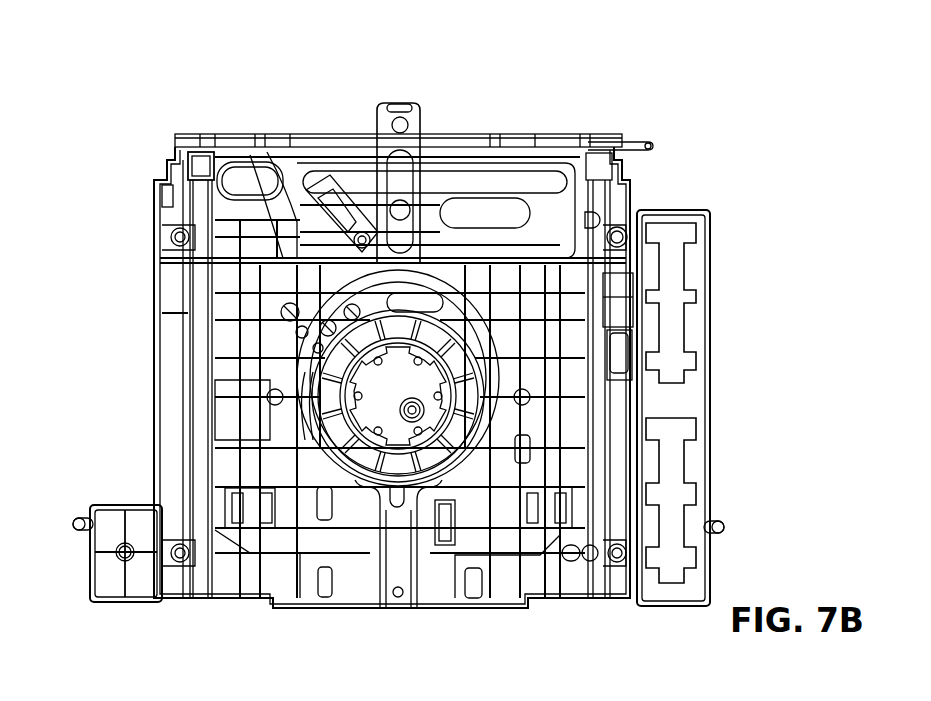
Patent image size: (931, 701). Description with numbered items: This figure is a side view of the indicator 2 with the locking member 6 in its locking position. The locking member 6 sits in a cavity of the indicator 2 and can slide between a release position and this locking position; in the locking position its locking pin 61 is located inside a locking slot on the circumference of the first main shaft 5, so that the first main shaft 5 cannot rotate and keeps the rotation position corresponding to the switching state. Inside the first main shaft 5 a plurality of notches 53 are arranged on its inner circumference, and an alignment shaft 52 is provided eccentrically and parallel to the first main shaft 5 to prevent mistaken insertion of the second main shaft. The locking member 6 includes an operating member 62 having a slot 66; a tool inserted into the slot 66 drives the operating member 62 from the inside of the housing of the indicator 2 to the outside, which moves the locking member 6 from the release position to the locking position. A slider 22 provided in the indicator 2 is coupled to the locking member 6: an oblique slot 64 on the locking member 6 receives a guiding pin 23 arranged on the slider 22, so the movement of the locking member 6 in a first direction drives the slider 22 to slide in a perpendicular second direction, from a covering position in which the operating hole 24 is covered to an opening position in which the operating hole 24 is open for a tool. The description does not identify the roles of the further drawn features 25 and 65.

The indicator 2 is at (112, 86).
The first main shaft 5 is at (407, 340).
The locking member 6 is at (305, 427).
The slider 22 is at (297, 220).
The guiding pin 23 is at (365, 217).
The operating hole 24 is at (198, 137).
The rod 25 is at (648, 138).
The alignment shaft 52 is at (420, 413).
The notches 53 is at (427, 367).
The locking pin 61 is at (398, 467).
The operating member 62 is at (415, 118).
The oblique slot 64 is at (333, 197).
The pin hole 65 is at (398, 118).
The slot 66 is at (402, 108).